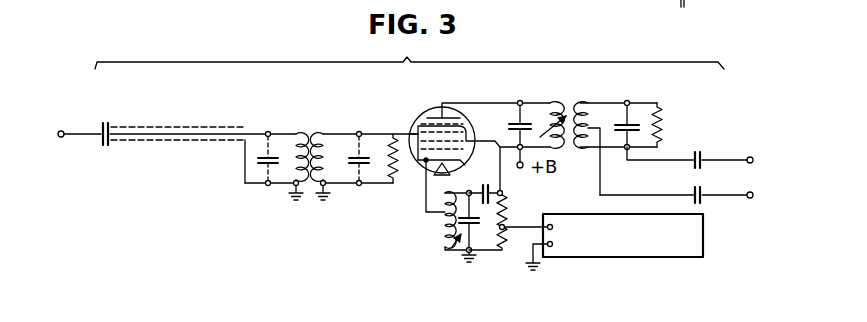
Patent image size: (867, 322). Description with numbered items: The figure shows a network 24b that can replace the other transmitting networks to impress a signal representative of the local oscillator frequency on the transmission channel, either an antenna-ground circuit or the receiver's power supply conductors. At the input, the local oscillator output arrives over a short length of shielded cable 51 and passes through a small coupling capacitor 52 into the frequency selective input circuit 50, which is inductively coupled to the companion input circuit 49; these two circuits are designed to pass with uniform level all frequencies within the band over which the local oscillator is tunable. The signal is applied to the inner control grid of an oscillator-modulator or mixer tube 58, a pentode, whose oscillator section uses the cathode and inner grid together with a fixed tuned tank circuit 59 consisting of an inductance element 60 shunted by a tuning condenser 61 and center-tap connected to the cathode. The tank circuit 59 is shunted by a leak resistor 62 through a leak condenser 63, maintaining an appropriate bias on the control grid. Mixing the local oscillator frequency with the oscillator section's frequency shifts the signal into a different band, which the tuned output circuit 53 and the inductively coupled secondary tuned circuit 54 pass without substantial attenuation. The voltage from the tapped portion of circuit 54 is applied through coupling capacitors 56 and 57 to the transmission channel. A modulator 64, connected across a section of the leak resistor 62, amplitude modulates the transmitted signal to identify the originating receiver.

The network 24b is at (409, 54).
The frequency selective input circuit 49 is at (344, 154).
The frequency selective input circuit 50 is at (281, 145).
The shielded cable 51 is at (135, 127).
The coupling capacitor 52 is at (101, 129).
The frequency selective output circuit 53 is at (535, 112).
The secondary tuned circuit 54 is at (607, 116).
The coupling capacitor 56 is at (703, 157).
The coupling capacitor 57 is at (703, 192).
The oscillator-modulator tube 58 is at (465, 124).
The fixed tuned tank circuit 59 is at (447, 251).
The inductance element 60 is at (440, 211).
The tuning condenser 61 is at (478, 234).
The leak resistor 62 is at (509, 213).
The leak condenser 63 is at (489, 176).
The modulator 64 is at (699, 236).